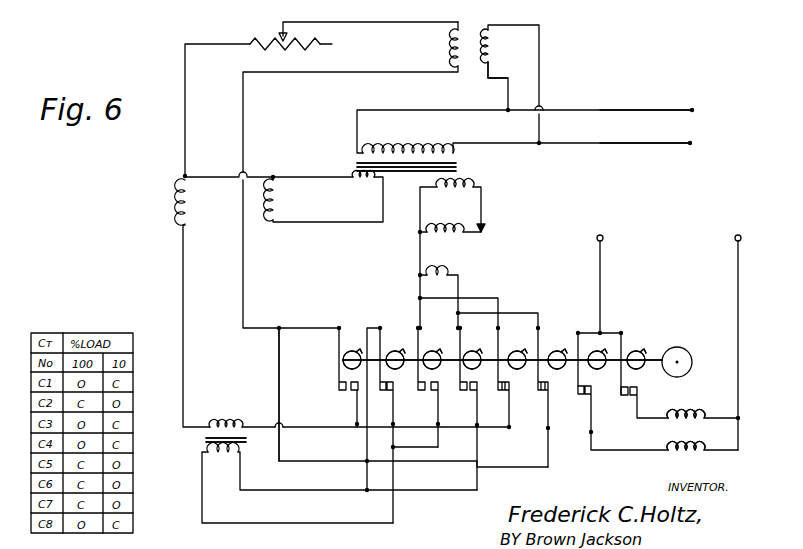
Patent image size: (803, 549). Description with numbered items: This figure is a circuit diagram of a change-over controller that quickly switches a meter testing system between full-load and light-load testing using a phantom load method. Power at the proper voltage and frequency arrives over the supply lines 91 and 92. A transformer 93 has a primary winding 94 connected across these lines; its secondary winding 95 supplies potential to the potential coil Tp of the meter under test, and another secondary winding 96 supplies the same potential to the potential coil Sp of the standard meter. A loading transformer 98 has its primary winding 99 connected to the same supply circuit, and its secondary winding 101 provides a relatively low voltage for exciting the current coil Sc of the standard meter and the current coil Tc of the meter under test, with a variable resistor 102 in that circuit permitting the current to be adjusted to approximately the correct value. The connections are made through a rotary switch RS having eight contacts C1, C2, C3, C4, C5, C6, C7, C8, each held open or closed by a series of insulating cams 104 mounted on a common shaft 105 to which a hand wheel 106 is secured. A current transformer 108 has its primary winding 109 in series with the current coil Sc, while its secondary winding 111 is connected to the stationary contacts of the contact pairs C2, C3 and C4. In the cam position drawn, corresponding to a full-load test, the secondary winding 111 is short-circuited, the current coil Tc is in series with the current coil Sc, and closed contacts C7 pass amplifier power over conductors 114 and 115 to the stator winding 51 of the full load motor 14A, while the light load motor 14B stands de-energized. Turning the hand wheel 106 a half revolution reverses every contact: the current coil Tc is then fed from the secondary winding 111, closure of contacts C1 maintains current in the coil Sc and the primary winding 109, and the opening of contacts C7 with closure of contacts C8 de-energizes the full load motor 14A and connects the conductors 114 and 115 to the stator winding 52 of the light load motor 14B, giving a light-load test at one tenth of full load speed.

The variable resistor 102 is at (258, 36).
The secondary winding 101 is at (450, 48).
The primary winding 99 is at (492, 48).
The loading transformer 98 is at (482, 80).
The supply line 91 is at (657, 111).
The supply line 92 is at (657, 144).
The primary winding 94 is at (408, 139).
The transformer 93 is at (343, 160).
The current coil Sc is at (178, 200).
The potential coil Sp is at (284, 200).
The secondary winding 96 is at (360, 186).
The secondary winding 95 is at (455, 196).
The potential coil Tp is at (452, 236).
The current coil Tc is at (453, 276).
The cams 104 is at (398, 345).
The conductor 114 is at (599, 305).
The conductor 115 is at (739, 332).
The common shaft 105 is at (653, 356).
The hand wheel 106 is at (687, 349).
The rotary switch RS is at (294, 394).
The switch contacts C1 is at (342, 377).
The switch contact pair C2 is at (380, 425).
The switch contact pair C3 is at (423, 387).
The switch contact pair C4 is at (461, 409).
The switch contacts C5 is at (496, 377).
The switch contacts C6 is at (534, 397).
The switch contacts C7 is at (613, 418).
The switch contacts C8 is at (633, 402).
The stator winding 52 is at (664, 425).
The light load motor 14B is at (686, 403).
The stator winding 51 is at (664, 456).
The full load motor 14A is at (686, 460).
The primary winding 109 is at (226, 413).
The current transformer 108 is at (198, 447).
The secondary winding 111 is at (223, 461).